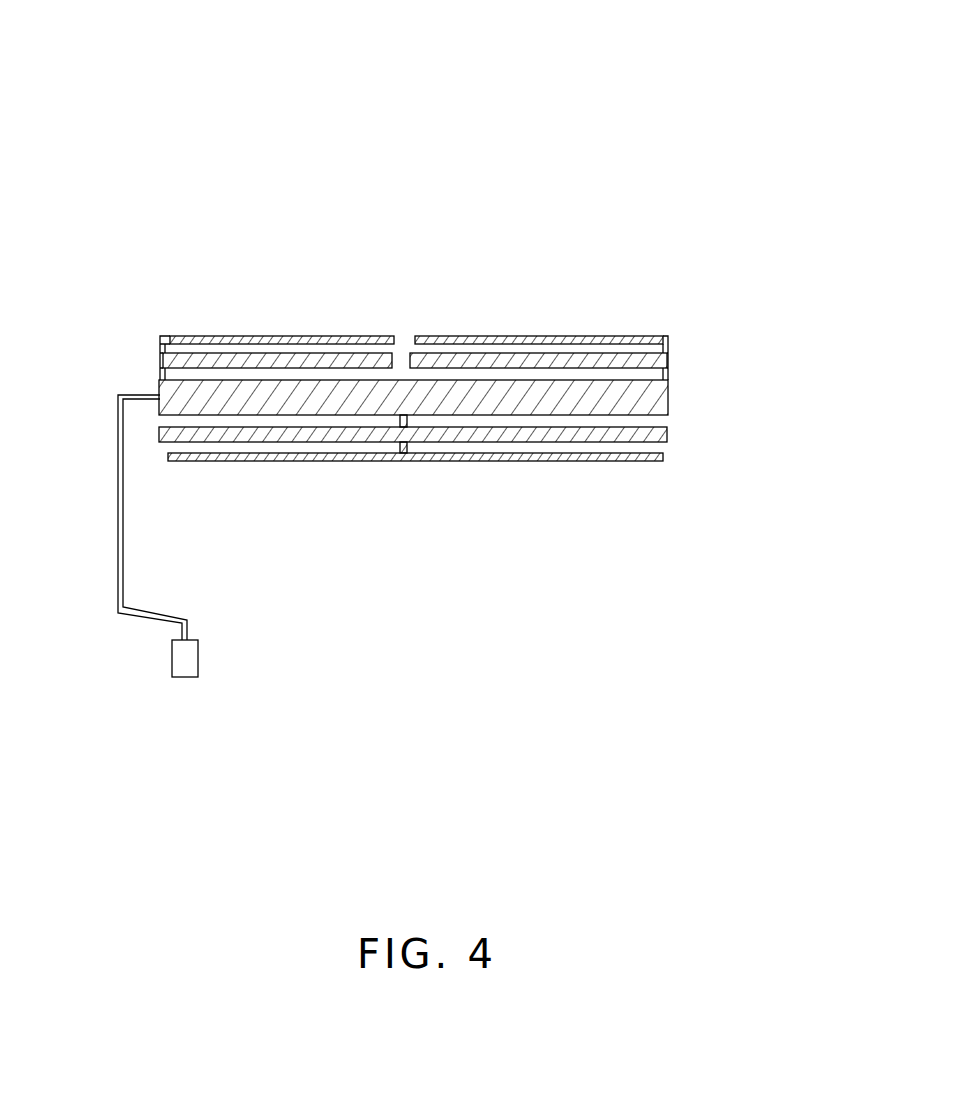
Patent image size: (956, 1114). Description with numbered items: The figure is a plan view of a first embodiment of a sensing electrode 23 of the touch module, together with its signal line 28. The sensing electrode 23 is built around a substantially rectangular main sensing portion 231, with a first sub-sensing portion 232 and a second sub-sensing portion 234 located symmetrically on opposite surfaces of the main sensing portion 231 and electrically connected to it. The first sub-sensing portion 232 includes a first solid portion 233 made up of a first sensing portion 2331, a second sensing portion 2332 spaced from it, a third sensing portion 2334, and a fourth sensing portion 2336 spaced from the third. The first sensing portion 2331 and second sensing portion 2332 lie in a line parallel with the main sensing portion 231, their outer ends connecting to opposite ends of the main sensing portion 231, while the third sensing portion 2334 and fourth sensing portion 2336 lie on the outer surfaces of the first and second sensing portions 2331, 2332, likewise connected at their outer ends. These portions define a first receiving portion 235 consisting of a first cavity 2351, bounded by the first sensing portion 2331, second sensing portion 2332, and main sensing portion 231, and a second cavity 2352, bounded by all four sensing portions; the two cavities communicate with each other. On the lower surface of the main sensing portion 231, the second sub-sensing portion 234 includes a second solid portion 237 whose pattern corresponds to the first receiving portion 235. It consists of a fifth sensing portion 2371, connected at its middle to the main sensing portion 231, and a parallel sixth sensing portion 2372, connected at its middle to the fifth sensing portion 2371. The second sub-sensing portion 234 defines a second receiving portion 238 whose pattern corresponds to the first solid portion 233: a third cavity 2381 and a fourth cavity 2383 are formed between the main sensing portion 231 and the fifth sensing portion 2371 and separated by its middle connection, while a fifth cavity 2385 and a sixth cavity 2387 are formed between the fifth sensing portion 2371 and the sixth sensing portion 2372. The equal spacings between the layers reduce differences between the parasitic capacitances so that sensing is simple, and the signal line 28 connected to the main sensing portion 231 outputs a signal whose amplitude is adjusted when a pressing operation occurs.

The sensing electrode 23 is at (459, 58).
The first solid portion 233 is at (617, 257).
The third sensing portion 2334 is at (218, 337).
The first sensing portion 2331 is at (333, 360).
The second sensing portion 2332 is at (448, 363).
The fourth sensing portion 2336 is at (558, 337).
The first sub-sensing portion 232 is at (155, 339).
The first receiving portion 235 is at (780, 347).
The second cavity 2352 is at (637, 347).
The first cavity 2351 is at (637, 375).
The main sensing portion 231 is at (663, 398).
The second solid portion 237 is at (758, 410).
The fifth sensing portion 2371 is at (650, 436).
The sixth sensing portion 2372 is at (645, 458).
The second sub-sensing portion 234 is at (642, 478).
The second receiving portion 238 is at (622, 530).
The fifth cavity 2385 is at (176, 446).
The third cavity 2381 is at (263, 415).
The fourth cavity 2383 is at (508, 418).
The sixth cavity 2387 is at (587, 447).
The signal line 28 is at (137, 395).